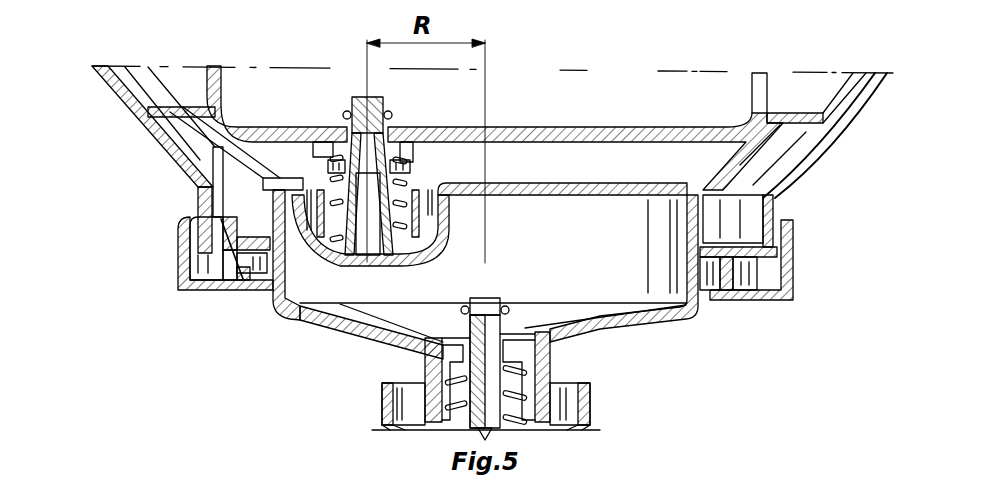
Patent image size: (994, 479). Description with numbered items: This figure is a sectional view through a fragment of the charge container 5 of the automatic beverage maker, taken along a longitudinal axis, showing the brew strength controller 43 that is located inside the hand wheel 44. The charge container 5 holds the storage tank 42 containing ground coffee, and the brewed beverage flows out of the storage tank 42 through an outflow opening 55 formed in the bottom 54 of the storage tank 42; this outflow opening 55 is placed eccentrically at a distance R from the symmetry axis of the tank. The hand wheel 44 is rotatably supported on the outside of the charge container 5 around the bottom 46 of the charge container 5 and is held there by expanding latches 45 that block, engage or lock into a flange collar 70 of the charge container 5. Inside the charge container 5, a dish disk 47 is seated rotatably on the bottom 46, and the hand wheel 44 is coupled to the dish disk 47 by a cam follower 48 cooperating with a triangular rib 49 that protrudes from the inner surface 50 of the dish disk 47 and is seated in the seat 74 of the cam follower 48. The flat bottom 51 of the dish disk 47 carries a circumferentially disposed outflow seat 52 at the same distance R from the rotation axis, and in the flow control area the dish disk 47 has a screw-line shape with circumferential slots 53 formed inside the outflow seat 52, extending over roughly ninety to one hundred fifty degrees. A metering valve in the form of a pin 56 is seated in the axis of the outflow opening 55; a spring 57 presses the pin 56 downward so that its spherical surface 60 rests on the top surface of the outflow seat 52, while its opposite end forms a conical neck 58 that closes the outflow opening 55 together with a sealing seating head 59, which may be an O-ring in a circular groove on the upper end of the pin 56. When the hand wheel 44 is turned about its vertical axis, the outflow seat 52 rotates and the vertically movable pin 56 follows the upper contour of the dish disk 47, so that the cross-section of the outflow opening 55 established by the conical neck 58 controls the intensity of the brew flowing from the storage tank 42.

The charge container 5 is at (180, 122).
The storage tank 42 is at (277, 111).
The controller 43 is at (747, 284).
The hand wheel 44 is at (192, 256).
The expanding latches 45 is at (219, 284).
The bottom 46 is at (354, 337).
The dish disk 47 is at (283, 170).
The cam follower 48 is at (163, 247).
The triangular rib 49 is at (163, 182).
The inner surface 50 is at (122, 126).
The flat bottom 51 is at (562, 238).
The outflow seat 52 is at (428, 205).
The circumferential slots 53 is at (493, 307).
The bottom 54 is at (637, 207).
The outflow opening 55 is at (345, 171).
The pin 56 is at (370, 250).
The spring 57 is at (419, 200).
The conical neck 58 is at (411, 172).
The sealing seating head 59 is at (391, 98).
The spherical surface 60 is at (445, 238).
The flange collar 70 is at (231, 307).
The seat 74 is at (128, 220).